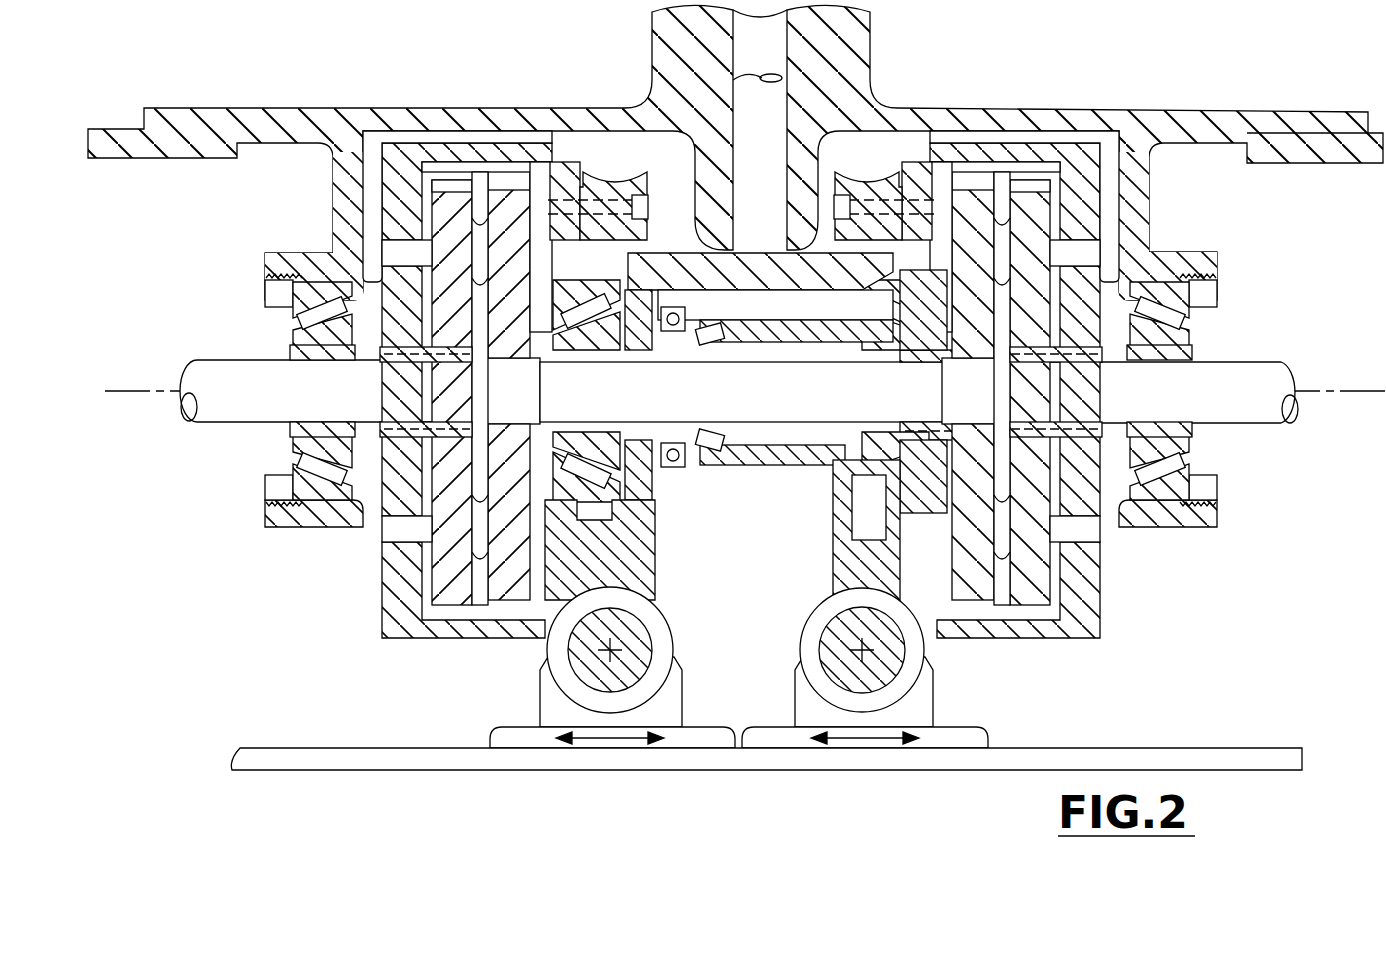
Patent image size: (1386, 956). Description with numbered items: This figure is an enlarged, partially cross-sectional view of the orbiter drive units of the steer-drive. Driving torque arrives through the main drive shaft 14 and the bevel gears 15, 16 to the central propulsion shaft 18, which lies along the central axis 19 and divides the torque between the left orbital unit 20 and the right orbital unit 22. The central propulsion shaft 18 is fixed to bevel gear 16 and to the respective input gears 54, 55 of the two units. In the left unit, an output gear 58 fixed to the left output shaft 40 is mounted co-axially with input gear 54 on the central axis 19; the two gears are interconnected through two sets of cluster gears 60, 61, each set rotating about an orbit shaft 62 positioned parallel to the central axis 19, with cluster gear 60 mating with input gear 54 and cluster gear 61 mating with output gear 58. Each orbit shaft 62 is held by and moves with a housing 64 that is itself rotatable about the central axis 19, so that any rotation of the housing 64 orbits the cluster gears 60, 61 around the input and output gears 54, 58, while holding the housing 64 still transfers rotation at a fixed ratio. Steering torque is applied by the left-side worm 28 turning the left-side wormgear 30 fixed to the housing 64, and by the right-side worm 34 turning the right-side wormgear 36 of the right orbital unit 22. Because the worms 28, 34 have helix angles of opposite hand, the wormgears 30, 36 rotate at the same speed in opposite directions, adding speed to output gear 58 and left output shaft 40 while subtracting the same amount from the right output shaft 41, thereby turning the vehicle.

The main drive shaft 14 is at (757, 108).
The bevel gear 15 is at (775, 284).
The bevel gear 16 is at (633, 494).
The central propulsion shaft 18 is at (808, 418).
The central axis 19 is at (1348, 393).
The left orbital unit 20 is at (435, 378).
The right orbital unit 22 is at (1143, 596).
The left-side worm 28 is at (642, 613).
The left-side wormgear 30 is at (624, 571).
The right-side worm 34 is at (855, 628).
The right-side wormgear 36 is at (833, 178).
The left output shaft 40 is at (235, 372).
The right output shaft 41 is at (1231, 374).
The input gear 54 is at (508, 430).
The input gear 55 is at (973, 347).
The output gear 58 is at (447, 338).
The cluster gear 60 is at (513, 200).
The cluster gear 61 is at (450, 205).
The orbit shaft 62 is at (400, 255).
The housing 64 is at (392, 597).